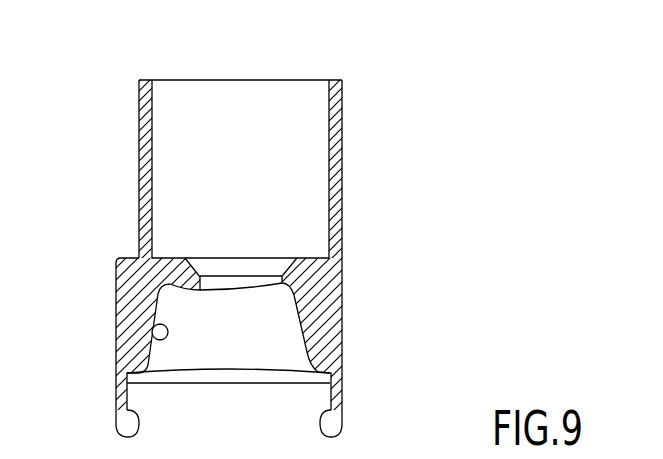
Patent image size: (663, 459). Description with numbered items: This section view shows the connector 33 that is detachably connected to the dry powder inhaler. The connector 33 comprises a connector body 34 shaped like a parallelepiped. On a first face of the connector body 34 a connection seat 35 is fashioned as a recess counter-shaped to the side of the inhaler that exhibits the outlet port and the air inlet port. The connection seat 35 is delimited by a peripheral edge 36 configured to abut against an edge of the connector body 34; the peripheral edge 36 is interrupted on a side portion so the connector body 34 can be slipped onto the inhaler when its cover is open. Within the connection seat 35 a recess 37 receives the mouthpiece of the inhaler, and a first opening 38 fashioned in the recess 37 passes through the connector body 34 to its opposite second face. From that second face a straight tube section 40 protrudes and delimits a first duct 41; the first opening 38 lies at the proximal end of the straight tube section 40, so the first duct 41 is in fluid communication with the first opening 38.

The connector 33 is at (263, 223).
The connector body 34 is at (337, 317).
The connection seat 35 is at (212, 387).
The peripheral edge 36 is at (114, 434).
The recess 37 is at (162, 342).
The first opening 38 is at (289, 267).
The straight tube section 40 is at (343, 135).
The first duct 41 is at (150, 118).